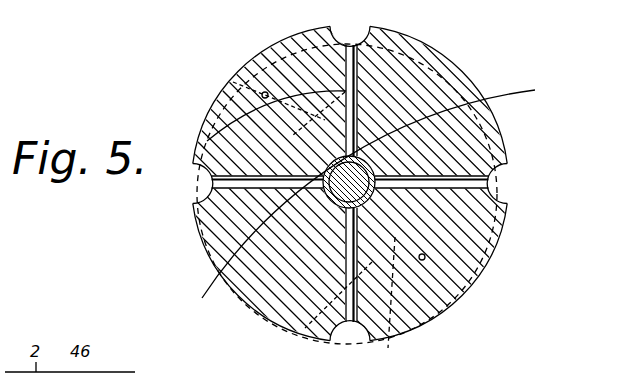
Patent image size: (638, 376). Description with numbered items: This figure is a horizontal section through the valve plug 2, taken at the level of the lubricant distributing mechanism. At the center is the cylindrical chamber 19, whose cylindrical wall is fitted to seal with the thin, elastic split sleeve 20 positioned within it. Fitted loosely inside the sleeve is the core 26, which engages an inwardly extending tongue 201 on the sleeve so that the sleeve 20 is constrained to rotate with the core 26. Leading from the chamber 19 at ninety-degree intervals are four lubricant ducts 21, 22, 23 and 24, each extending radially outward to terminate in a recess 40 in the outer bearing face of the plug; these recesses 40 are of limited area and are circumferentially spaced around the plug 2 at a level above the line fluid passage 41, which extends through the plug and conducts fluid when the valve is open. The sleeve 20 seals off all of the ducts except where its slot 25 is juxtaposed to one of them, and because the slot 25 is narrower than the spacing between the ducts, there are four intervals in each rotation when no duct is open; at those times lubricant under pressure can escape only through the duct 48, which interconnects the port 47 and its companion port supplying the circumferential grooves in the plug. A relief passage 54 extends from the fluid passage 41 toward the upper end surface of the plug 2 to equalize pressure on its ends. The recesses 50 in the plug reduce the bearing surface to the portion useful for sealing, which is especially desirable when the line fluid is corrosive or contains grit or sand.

The plug 2 is at (267, 45).
The cylindrical chamber 19 is at (359, 93).
The split sleeve 20 is at (377, 208).
The lubricant duct 21 is at (483, 140).
The lubricant duct 22 is at (344, 283).
The lubricant duct 23 is at (335, 204).
The lubricant duct 24 is at (358, 92).
The slot 25 is at (383, 186).
The core 26 is at (343, 210).
The recess 40 is at (360, 31).
The passage 41 is at (392, 302).
The port 47 is at (226, 88).
The duct 48 is at (207, 141).
The recess 50 is at (220, 105).
The relief passage 54 is at (426, 257).
The tongue 201 is at (218, 297).